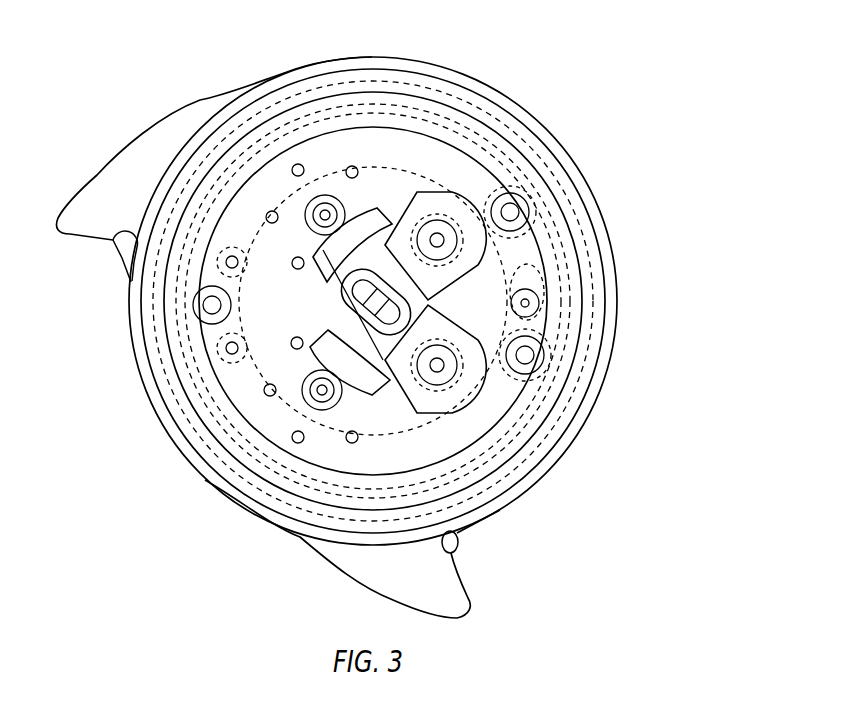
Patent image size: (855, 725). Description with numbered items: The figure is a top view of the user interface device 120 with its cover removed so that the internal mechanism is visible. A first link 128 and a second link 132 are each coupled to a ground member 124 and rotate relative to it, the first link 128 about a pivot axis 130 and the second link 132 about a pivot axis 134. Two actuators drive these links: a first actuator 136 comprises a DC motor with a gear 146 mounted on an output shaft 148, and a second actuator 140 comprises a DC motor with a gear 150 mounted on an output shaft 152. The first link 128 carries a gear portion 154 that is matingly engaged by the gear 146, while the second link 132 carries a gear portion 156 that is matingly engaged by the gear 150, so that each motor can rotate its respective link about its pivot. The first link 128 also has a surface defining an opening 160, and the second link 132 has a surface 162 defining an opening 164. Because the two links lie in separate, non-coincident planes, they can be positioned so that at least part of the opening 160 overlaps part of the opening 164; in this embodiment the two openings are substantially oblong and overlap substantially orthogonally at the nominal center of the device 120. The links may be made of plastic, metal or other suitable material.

The user interface device 120 is at (688, 99).
The ground member 124 is at (453, 167).
The first link 128 is at (443, 208).
The pivot axis 130 is at (438, 240).
The second link 132 is at (465, 395).
The pivot axis 134 is at (437, 365).
The first actuator 136 is at (268, 370).
The second actuator 140 is at (345, 147).
The gear 146 is at (322, 392).
The output shaft 148 is at (308, 396).
The gear 150 is at (325, 250).
The output shaft 152 is at (305, 210).
The gear portion 154 is at (358, 405).
The gear portion 156 is at (338, 290).
The opening 160 is at (293, 343).
The surface 162 is at (310, 295).
The opening 164 is at (355, 283).